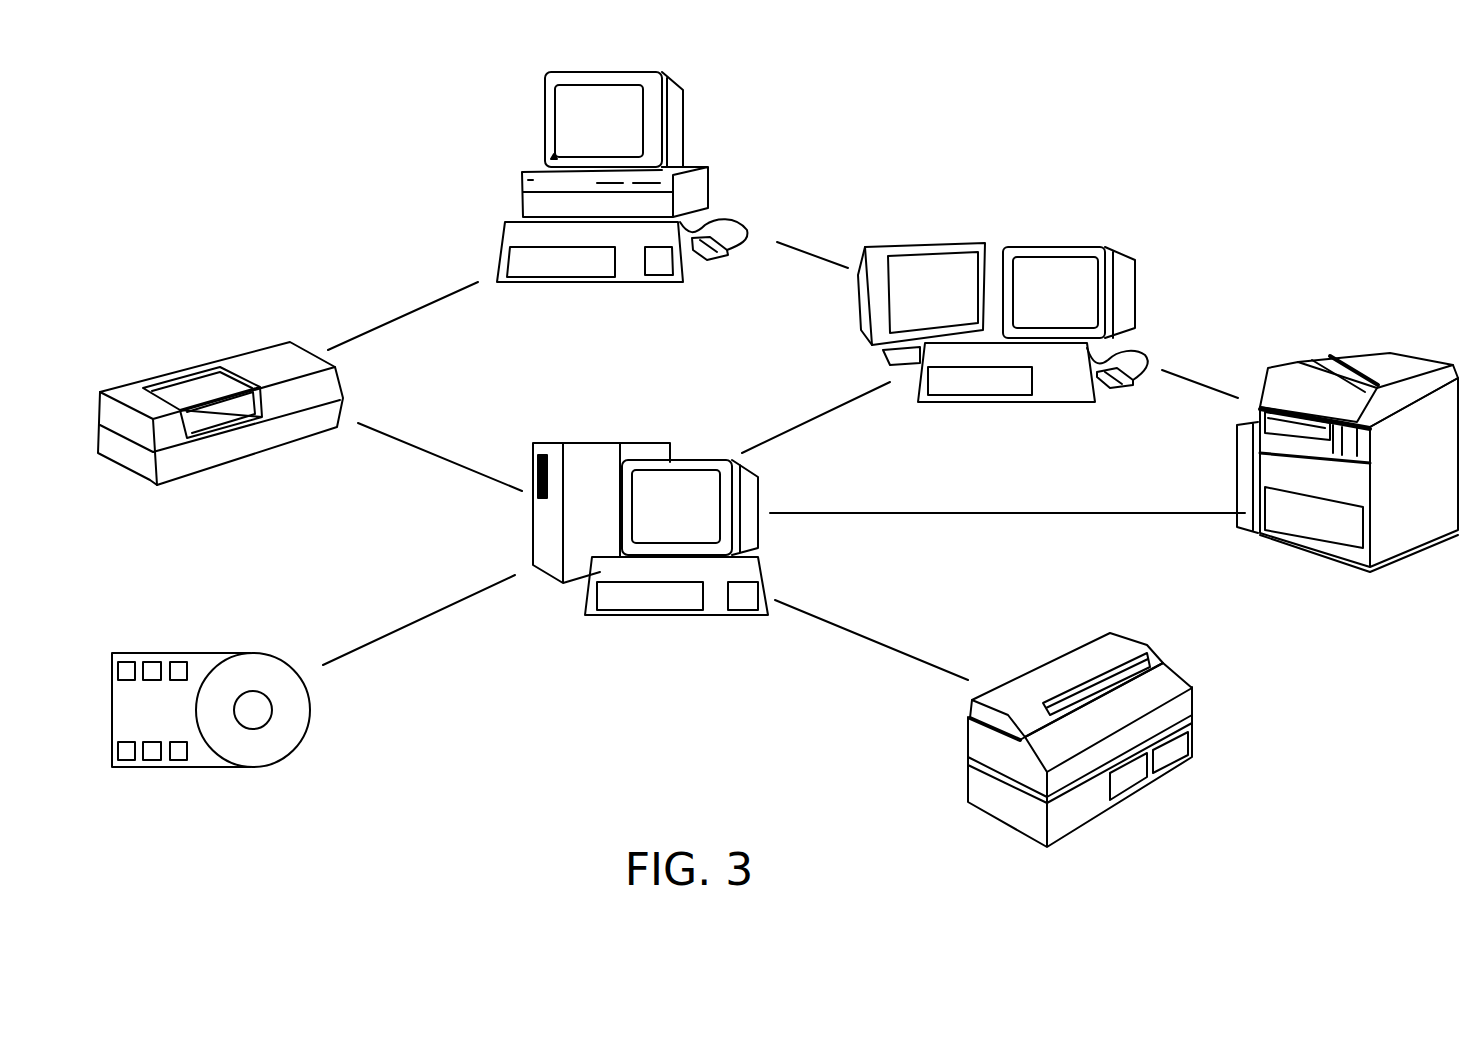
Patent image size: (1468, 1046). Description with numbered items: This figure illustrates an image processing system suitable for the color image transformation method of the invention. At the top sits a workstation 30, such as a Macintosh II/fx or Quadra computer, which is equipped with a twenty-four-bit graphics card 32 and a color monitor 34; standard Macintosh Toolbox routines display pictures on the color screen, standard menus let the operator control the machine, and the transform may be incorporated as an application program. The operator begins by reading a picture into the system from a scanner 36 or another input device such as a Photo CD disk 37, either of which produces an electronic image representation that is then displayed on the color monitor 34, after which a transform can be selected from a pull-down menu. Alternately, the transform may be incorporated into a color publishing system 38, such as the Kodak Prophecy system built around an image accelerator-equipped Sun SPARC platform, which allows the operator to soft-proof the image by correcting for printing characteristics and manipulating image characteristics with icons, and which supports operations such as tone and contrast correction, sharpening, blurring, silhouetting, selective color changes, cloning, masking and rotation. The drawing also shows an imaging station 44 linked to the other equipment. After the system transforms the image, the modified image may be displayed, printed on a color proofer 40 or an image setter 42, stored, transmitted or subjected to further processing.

The workstation 30 is at (582, 72).
The 24-bit graphics card 32 is at (705, 193).
The color monitor 34 is at (680, 109).
The scanner 36 is at (221, 358).
The Photo CD disk 37 is at (253, 653).
The color publishing system 38 is at (1084, 249).
The color proofer 40 is at (1060, 656).
The image setter 42 is at (1353, 352).
The imaging station 44 is at (610, 443).